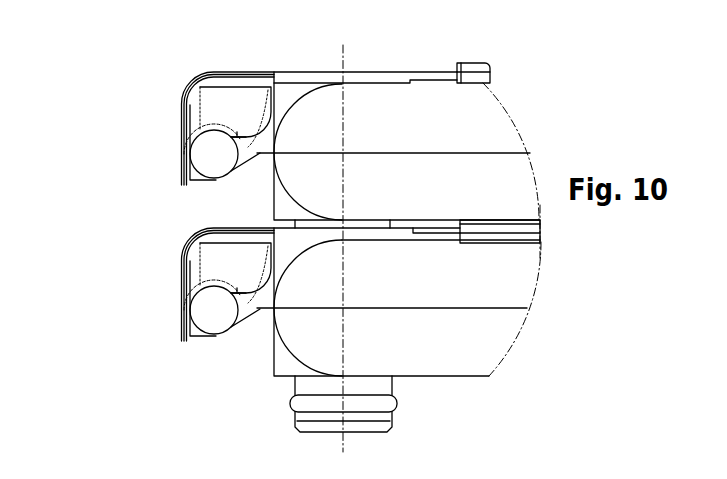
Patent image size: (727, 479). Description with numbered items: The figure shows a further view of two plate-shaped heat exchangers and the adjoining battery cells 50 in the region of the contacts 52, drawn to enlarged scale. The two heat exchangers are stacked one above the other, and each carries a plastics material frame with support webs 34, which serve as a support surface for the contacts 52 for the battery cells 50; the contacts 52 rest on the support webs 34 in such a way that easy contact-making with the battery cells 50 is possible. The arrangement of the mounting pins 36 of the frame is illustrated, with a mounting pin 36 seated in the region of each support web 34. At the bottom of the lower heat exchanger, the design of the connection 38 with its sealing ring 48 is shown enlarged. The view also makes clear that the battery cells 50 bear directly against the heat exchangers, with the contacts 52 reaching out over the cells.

The support webs 34 is at (217, 102).
The mounting pins 36 is at (215, 165).
The connection 38 is at (293, 418).
The sealing ring 48 is at (385, 400).
The battery cells 50 is at (478, 67).
The contacts 52 is at (210, 77).